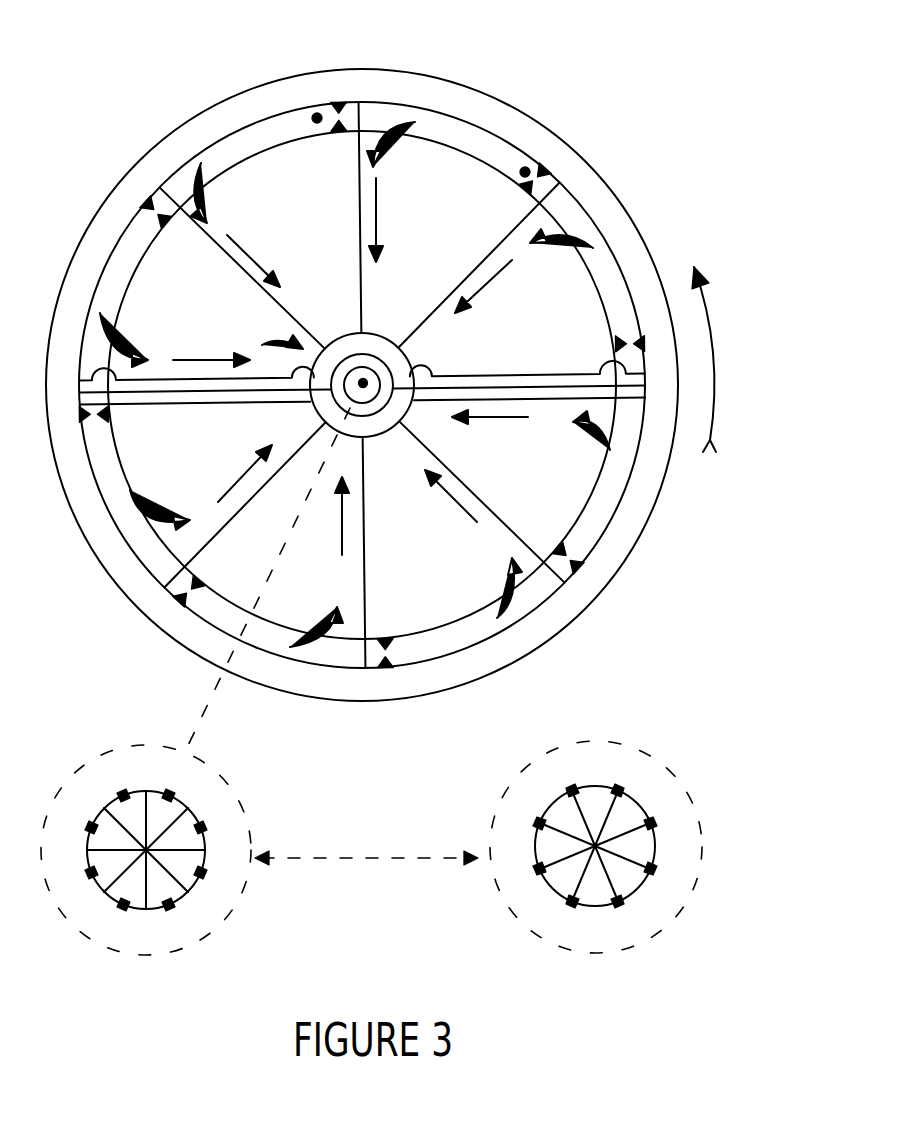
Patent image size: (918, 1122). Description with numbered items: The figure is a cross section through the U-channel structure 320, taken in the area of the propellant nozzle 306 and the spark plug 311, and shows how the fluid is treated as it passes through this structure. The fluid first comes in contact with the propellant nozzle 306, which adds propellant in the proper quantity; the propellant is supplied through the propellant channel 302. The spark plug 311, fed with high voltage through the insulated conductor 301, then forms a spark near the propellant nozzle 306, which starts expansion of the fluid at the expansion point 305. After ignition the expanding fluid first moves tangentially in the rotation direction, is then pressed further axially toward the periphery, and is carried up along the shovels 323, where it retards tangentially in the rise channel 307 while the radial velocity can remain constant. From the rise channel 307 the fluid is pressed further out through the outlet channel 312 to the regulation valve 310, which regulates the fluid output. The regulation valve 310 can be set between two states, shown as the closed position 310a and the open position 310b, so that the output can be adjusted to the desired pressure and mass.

The insulated conductor 301 is at (211, 336).
The propellant channel 302 is at (343, 347).
The expansion point 305 is at (525, 172).
The propellant nozzle 306 is at (537, 170).
The rise channel 307 is at (410, 537).
The regulation valve 310 is at (449, 367).
The outlet channel 312 is at (363, 383).
The closed regulation valve 310a is at (243, 810).
The open regulation valve 310b is at (550, 847).
The spark plug 311 is at (533, 190).
The U-channel structure 320 is at (652, 512).
The shovels 323 is at (480, 492).